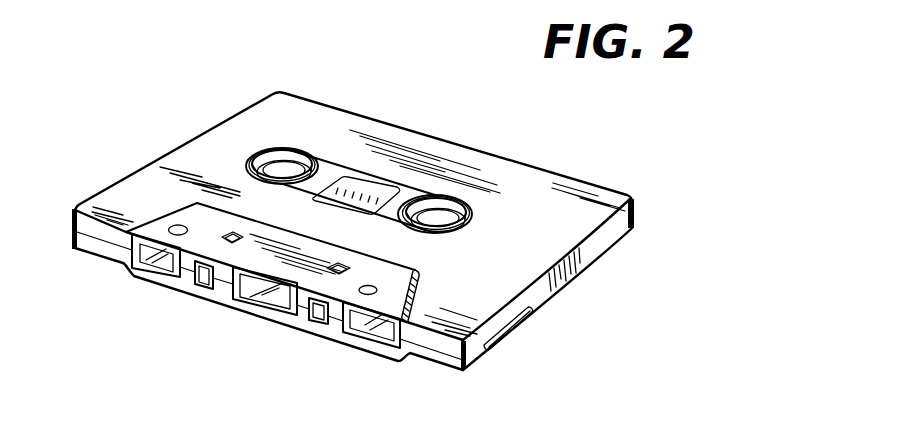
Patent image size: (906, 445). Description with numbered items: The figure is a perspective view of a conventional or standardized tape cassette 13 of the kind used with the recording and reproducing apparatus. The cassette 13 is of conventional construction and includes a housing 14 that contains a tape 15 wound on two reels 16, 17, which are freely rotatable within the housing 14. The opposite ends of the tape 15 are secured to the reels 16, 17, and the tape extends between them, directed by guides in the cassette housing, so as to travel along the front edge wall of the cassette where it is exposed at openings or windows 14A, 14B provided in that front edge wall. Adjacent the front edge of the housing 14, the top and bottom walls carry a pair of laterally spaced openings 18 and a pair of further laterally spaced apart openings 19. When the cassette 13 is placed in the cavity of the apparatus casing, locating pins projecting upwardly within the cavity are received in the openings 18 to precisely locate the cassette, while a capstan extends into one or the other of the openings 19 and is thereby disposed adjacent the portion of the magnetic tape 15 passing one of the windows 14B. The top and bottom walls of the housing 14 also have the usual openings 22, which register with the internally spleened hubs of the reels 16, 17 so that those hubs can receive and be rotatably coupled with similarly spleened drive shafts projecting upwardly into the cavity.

The tape cassette 13 is at (604, 168).
The housing 14 is at (587, 219).
The opening or window 14A is at (252, 296).
The openings or windows 14B is at (174, 271).
The tape 15 is at (288, 300).
The reel 16 is at (441, 206).
The reel 17 is at (301, 160).
The openings 18 is at (342, 264).
The further openings 19 is at (180, 226).
The openings 22 is at (275, 158).